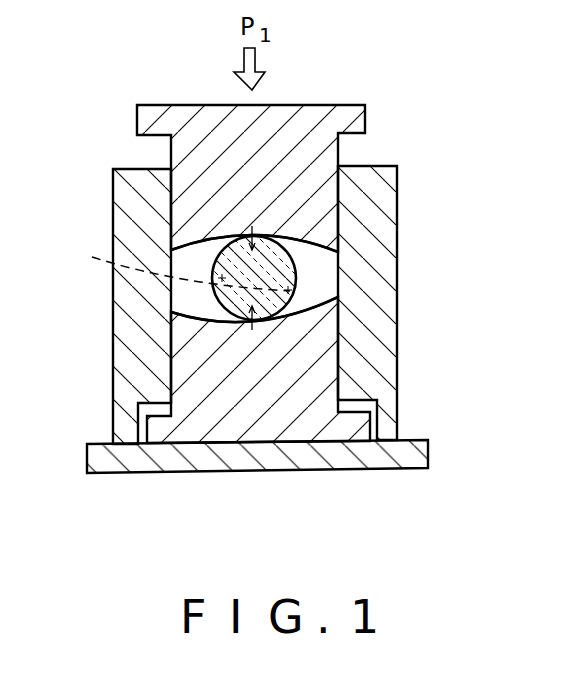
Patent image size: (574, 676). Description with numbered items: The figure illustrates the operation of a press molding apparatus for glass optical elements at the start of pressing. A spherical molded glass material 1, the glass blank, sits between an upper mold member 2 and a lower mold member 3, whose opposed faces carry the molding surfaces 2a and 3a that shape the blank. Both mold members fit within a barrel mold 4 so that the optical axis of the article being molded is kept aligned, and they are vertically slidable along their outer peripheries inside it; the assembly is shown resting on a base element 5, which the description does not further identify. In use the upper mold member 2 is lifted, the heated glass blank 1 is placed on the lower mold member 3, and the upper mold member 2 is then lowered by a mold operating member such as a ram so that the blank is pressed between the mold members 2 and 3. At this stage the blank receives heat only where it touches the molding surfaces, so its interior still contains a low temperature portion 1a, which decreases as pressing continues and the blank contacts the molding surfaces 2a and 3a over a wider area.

The molded glass material 1 is at (223, 236).
The low temperature portion 1a is at (169, 268).
The upper mold member 2 is at (322, 110).
The molding surface 2a is at (305, 248).
The lower mold member 3 is at (310, 420).
The molding surface 3a is at (339, 297).
The barrel mold 4 is at (383, 219).
The base plate 5 is at (250, 457).